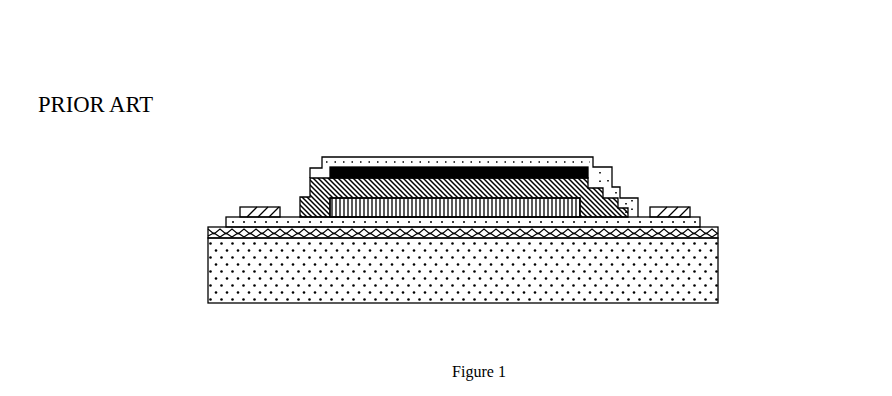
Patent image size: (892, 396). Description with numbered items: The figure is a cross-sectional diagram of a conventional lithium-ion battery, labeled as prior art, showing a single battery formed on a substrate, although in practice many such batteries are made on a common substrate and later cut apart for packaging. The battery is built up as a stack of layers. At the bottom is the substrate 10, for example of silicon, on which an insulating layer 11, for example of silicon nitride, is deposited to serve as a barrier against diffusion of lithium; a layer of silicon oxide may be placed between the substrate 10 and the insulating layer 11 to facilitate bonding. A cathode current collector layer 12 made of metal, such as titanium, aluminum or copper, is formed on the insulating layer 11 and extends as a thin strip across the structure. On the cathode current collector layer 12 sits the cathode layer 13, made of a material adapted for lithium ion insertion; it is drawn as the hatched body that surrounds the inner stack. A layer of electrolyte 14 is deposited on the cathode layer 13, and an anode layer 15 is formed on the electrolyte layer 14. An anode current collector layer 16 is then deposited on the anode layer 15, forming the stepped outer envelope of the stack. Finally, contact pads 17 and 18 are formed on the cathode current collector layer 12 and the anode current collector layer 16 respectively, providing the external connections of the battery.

The substrate 10 is at (710, 267).
The insulating layer 11 is at (708, 228).
The cathode current collector layer 12 is at (293, 215).
The cathode layer 13 is at (368, 178).
The electrolyte layer 14 is at (418, 168).
The anode layer 15 is at (463, 166).
The anode current collector layer 16 is at (522, 157).
The contact pad 17 is at (256, 205).
The contact pad 18 is at (664, 200).